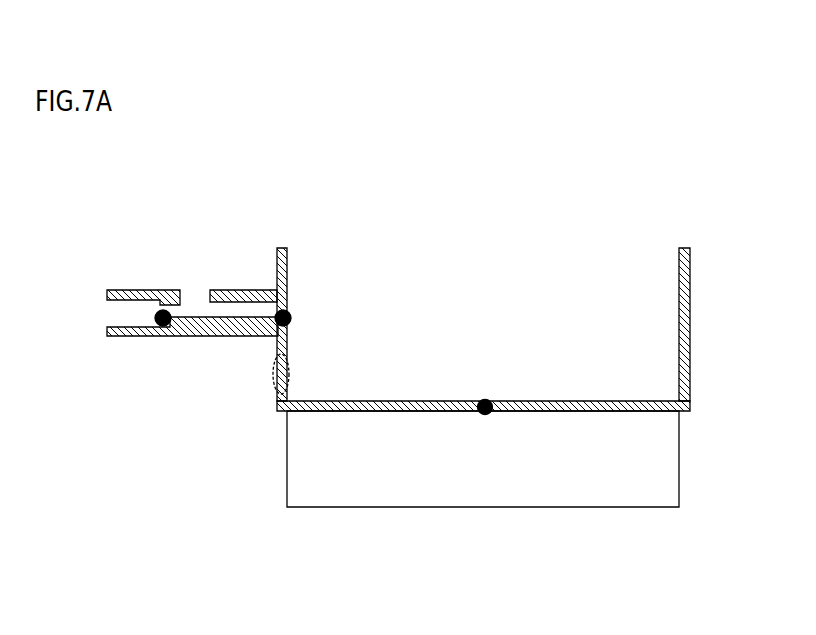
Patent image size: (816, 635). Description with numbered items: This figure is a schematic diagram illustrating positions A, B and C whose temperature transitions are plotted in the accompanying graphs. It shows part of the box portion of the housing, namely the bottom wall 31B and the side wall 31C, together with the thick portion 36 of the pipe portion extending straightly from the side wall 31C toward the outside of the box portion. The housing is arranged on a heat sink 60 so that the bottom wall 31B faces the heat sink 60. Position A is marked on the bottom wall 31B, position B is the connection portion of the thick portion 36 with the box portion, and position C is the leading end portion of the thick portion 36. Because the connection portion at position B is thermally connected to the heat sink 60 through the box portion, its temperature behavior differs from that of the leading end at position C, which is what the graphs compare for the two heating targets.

The bottom wall 31B is at (570, 401).
The side wall 31C is at (295, 370).
The thick portion 36 is at (273, 341).
The heat sink 60 is at (671, 478).
The position A is at (491, 402).
The position B is at (292, 318).
The position C is at (172, 318).